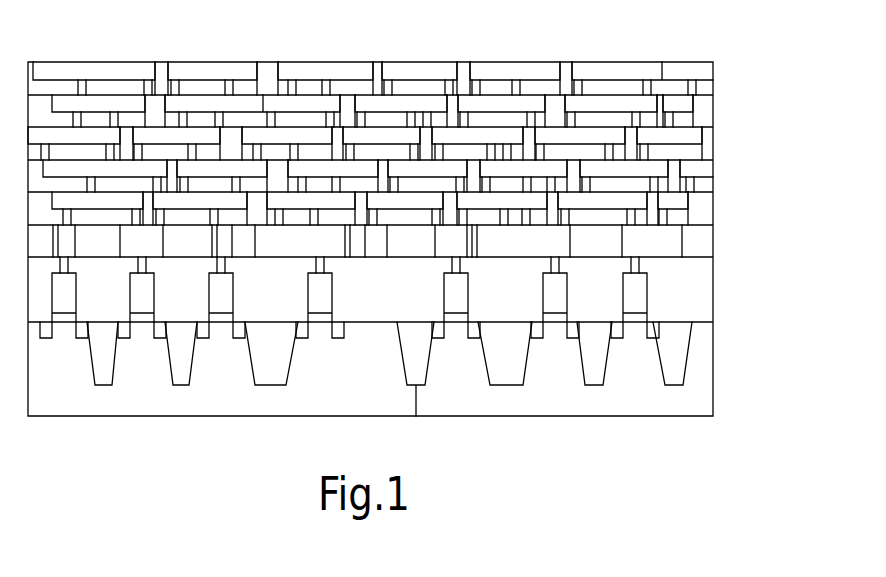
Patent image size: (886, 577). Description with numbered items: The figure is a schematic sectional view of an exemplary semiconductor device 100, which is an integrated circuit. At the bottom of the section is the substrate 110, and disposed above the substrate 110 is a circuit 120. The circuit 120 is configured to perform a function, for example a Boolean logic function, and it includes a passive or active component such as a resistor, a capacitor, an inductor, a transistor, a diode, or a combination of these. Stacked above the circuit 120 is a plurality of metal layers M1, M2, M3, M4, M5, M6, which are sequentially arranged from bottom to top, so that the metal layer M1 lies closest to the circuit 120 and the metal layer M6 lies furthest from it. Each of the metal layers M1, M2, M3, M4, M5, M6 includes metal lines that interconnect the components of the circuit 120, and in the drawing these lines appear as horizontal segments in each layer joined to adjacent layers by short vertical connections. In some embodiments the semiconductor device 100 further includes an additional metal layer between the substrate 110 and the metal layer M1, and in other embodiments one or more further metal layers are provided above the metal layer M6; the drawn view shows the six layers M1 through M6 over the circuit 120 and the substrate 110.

The semiconductor device 100 is at (67, 30).
The substrate 110 is at (713, 367).
The circuit 120 is at (713, 290).
The metal layer M1 is at (713, 237).
The metal layer M2 is at (713, 208).
The metal layer M3 is at (713, 173).
The metal layer M4 is at (713, 143).
The metal layer M5 is at (713, 115).
The metal layer M6 is at (713, 70).